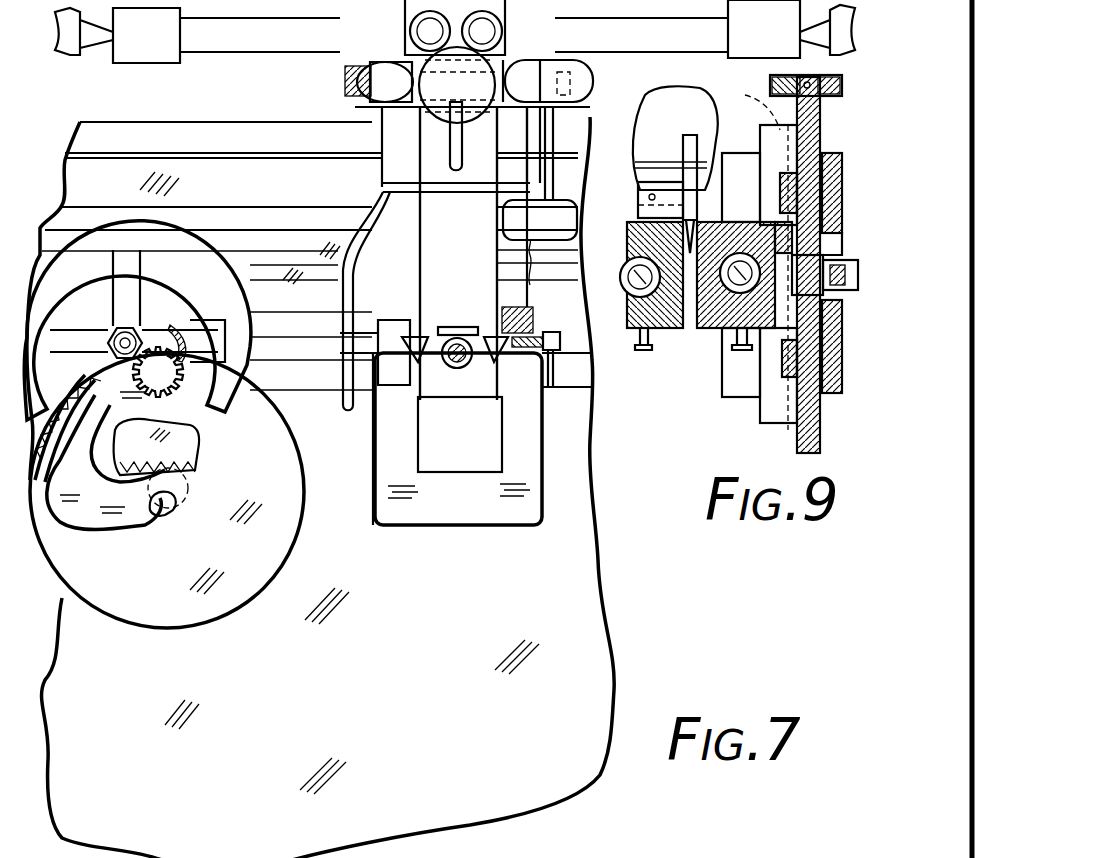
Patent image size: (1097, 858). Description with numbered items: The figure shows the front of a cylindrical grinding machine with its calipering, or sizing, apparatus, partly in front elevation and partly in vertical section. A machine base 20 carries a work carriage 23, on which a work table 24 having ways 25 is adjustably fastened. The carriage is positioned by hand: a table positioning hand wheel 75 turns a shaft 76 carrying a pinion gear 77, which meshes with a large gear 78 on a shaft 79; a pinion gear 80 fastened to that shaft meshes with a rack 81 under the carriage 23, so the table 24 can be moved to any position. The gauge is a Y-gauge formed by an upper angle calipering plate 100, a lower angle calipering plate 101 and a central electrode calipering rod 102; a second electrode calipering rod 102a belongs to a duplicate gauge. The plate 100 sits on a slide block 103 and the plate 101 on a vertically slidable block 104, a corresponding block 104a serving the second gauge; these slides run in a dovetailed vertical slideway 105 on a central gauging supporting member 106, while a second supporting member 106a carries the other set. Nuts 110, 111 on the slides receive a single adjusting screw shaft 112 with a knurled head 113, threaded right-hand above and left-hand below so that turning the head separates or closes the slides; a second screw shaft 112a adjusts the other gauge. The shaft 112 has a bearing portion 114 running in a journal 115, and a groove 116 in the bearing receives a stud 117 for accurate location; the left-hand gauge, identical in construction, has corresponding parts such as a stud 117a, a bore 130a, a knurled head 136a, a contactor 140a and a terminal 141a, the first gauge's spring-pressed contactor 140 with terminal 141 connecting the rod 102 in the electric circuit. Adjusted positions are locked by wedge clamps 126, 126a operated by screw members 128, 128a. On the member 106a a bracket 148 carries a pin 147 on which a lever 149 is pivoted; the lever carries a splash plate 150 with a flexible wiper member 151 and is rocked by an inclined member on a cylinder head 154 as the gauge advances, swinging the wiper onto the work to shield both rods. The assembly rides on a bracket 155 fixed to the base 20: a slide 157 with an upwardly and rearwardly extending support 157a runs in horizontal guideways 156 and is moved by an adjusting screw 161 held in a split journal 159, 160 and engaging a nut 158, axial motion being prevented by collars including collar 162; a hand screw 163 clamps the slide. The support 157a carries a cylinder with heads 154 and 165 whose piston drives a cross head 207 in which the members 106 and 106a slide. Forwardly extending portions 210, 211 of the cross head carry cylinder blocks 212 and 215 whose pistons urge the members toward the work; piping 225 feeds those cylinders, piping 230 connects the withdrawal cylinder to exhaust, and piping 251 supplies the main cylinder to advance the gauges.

In FIG. 7, the machine base 20 is at (596, 612).
In FIG. 7, the work carriage 23 is at (262, 236).
In FIG. 7, the work table 24 is at (68, 182).
In FIG. 7, the ways 25 is at (130, 133).
In FIG. 7, the table positioning hand wheel 75 is at (240, 362).
In FIG. 7, the shaft 76 is at (112, 330).
In FIG. 7, the pinion gear 77 is at (178, 335).
In FIG. 7, the large gear 78 is at (62, 505).
In FIG. 7, the shaft 79 is at (160, 515).
In FIG. 7, the pinion gear 80 is at (190, 485).
In FIG. 7, the rack 81 is at (200, 440).
In FIG. 9, the upper angle calipering plate 100 is at (735, 158).
In FIG. 9, the lower angle calipering plate 101 is at (660, 430).
In FIG. 9, the central electrode calipering rod 102 is at (740, 230).
In FIG. 9, the second electrode calipering rod 102a is at (627, 240).
In FIG. 9, the slide block 103 is at (842, 180).
In FIG. 7, the vertically slidable block 104 is at (540, 46).
In FIG. 9, the vertically slidable block 104 is at (842, 362).
In FIG. 7, the vertically slidable block 104a is at (372, 58).
In FIG. 9, the vertical slideway 105 is at (775, 105).
In FIG. 9, the central gauging supporting member 106 is at (760, 125).
In FIG. 9, the central gauging supporting member 106a is at (672, 345).
In FIG. 9, the nut 110 is at (780, 195).
In FIG. 9, the nut 111 is at (782, 405).
In FIG. 7, the adjusting screw shaft 112 is at (516, 253).
In FIG. 9, the adjusting screw shaft 112 is at (822, 135).
In FIG. 7, the screw shaft 112a is at (360, 125).
In FIG. 9, the knurled head 113 is at (842, 92).
In FIG. 9, the bearing portion 114 is at (845, 245).
In FIG. 7, the journal 115 is at (584, 7).
In FIG. 9, the journal 115 is at (848, 255).
In FIG. 9, the groove 116 is at (840, 320).
In FIG. 7, the stud 117 is at (631, 7).
In FIG. 9, the stud 117 is at (855, 285).
In FIG. 7, the bolt 117a is at (215, 30).
In FIG. 7, the wedge clamp 126 is at (455, 61).
In FIG. 7, the wedge clamp 126a is at (447, 85).
In FIG. 7, the screw member 128 is at (612, 56).
In FIG. 7, the screw member 128a is at (340, 58).
In FIG. 9, the clamp jaw 130a is at (635, 320).
In FIG. 7, the valve body 136a is at (370, 90).
In FIG. 9, the contactor 140 is at (740, 350).
In FIG. 9, the clamp pad 140a is at (638, 348).
In FIG. 9, the terminal 141 is at (720, 425).
In FIG. 9, the clamp arm 141a is at (690, 390).
In FIG. 9, the pin 147 is at (665, 185).
In FIG. 9, the bracket 148 is at (640, 210).
In FIG. 9, the lever 149 is at (690, 140).
In FIG. 9, the splash plate 150 is at (682, 93).
In FIG. 9, the wiper member 151 is at (640, 190).
In FIG. 7, the cylinder head 154 is at (448, 160).
In FIG. 7, the bracket 155 is at (458, 470).
In FIG. 7, the horizontal guideways 156 is at (420, 375).
In FIG. 7, the slide 157 is at (410, 330).
In FIG. 7, the upwardly and rearwardly extending support 157a is at (500, 222).
In FIG. 7, the nut 158 is at (455, 340).
In FIG. 7, the split journal 159 is at (478, 300).
In FIG. 7, the split journal 160 is at (428, 395).
In FIG. 7, the adjusting screw 161 is at (465, 392).
In FIG. 7, the collar 162 is at (435, 420).
In FIG. 7, the hand screw 163 is at (552, 400).
In FIG. 7, the cylinder head 165 is at (481, 143).
In FIG. 7, the cross head 207 is at (345, 75).
In FIG. 7, the forwardly extending portion 210 is at (545, 168).
In FIG. 7, the forwardly extending portion 211 is at (402, 253).
In FIG. 7, the cylinder block 212 is at (595, 78).
In FIG. 7, the cylinder block 215 is at (345, 115).
In FIG. 7, the piping 225 is at (365, 170).
In FIG. 7, the piping 230 is at (590, 125).
In FIG. 7, the piping 251 is at (468, 200).